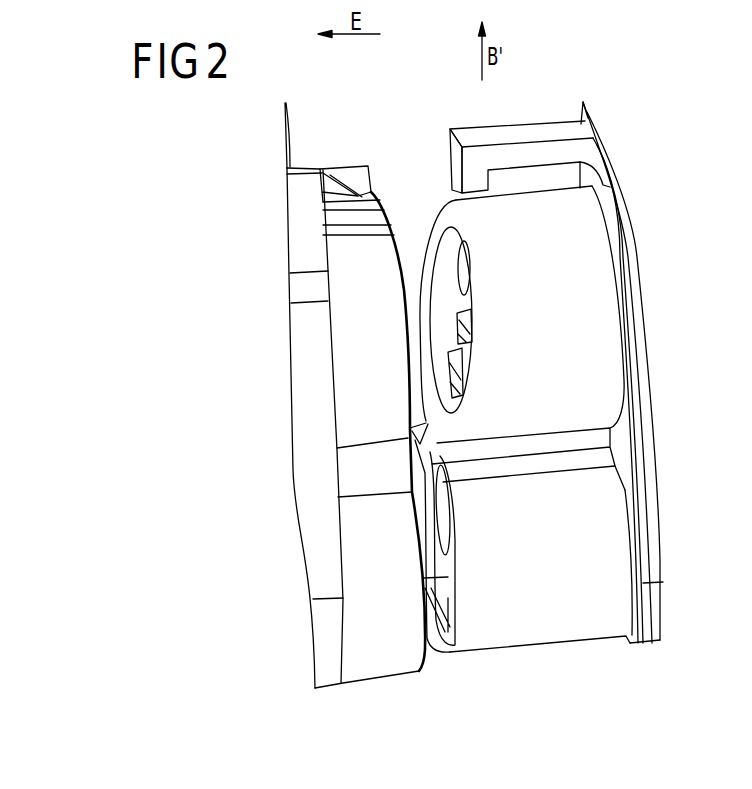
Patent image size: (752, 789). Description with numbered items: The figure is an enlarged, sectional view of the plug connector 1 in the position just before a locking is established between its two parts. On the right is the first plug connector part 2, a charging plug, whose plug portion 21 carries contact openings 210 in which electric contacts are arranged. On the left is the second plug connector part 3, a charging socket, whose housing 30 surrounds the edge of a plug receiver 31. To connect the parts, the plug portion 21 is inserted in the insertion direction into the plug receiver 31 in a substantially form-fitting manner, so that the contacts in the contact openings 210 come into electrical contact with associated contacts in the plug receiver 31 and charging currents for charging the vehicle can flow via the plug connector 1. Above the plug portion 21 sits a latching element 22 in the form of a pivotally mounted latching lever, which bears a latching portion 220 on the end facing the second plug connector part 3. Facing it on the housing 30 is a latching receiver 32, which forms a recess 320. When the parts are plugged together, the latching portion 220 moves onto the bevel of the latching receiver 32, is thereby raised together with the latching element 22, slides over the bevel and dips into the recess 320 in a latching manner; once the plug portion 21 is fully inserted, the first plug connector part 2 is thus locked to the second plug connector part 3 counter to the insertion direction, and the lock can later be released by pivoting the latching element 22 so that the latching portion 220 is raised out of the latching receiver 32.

The plug connector 1 is at (616, 104).
The first plug connector part 2 is at (599, 665).
The plug portion 21 is at (537, 630).
The latching element 22 is at (527, 103).
The contact openings 210 is at (468, 360).
The latching portion 220 is at (472, 180).
The second plug connector part 3 is at (376, 702).
The housing 30 is at (325, 675).
The plug receiver 31 is at (435, 669).
The latching receiver 32 is at (340, 138).
The recess 320 is at (303, 151).